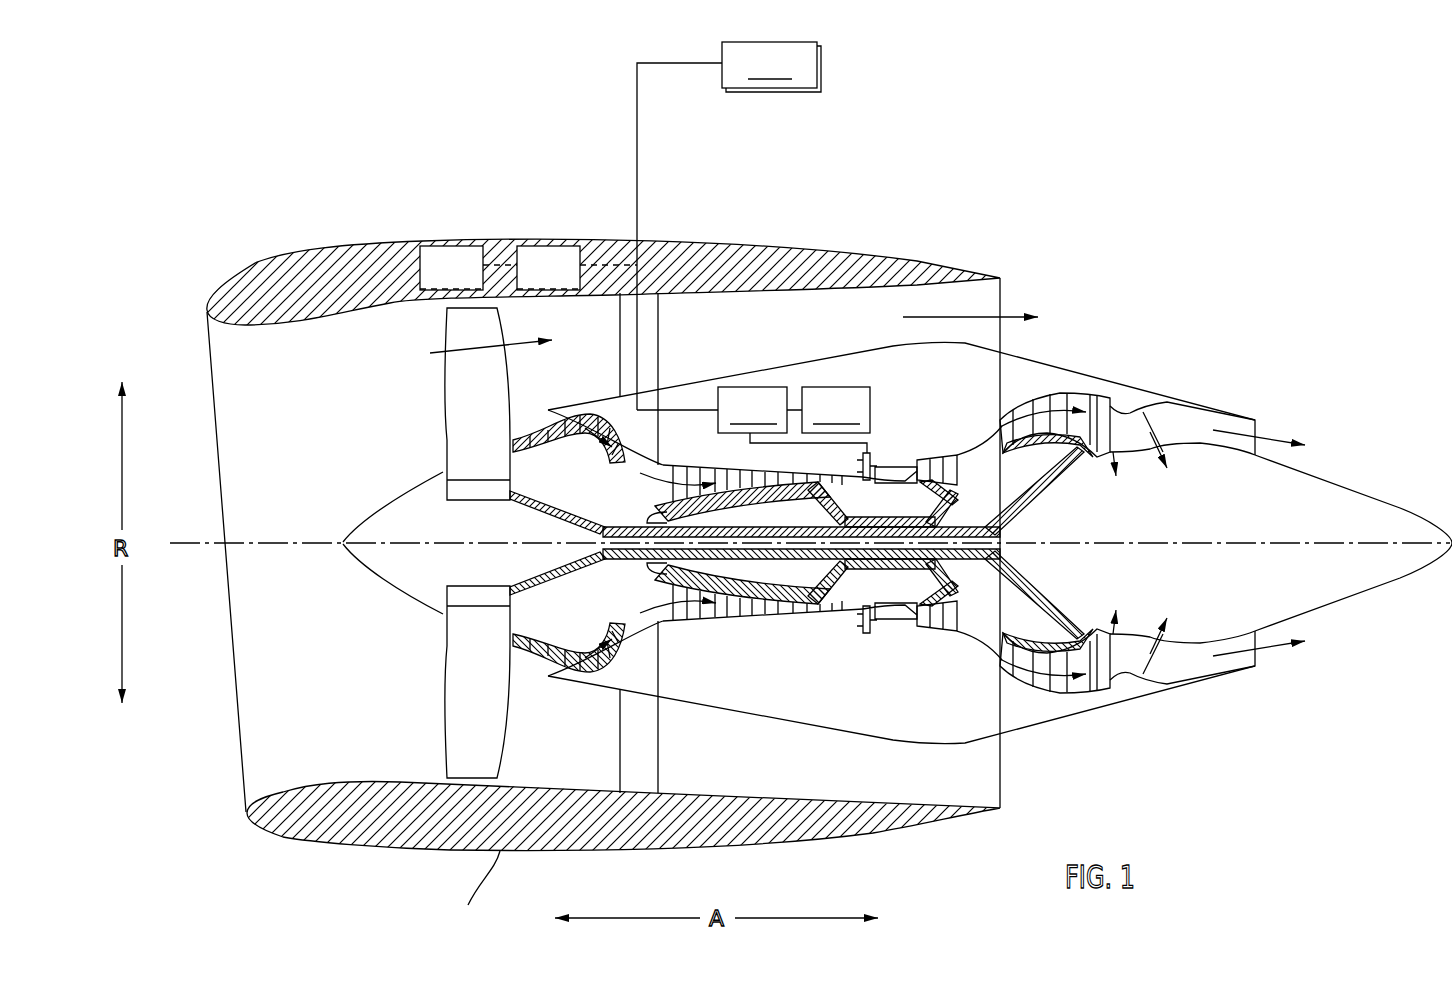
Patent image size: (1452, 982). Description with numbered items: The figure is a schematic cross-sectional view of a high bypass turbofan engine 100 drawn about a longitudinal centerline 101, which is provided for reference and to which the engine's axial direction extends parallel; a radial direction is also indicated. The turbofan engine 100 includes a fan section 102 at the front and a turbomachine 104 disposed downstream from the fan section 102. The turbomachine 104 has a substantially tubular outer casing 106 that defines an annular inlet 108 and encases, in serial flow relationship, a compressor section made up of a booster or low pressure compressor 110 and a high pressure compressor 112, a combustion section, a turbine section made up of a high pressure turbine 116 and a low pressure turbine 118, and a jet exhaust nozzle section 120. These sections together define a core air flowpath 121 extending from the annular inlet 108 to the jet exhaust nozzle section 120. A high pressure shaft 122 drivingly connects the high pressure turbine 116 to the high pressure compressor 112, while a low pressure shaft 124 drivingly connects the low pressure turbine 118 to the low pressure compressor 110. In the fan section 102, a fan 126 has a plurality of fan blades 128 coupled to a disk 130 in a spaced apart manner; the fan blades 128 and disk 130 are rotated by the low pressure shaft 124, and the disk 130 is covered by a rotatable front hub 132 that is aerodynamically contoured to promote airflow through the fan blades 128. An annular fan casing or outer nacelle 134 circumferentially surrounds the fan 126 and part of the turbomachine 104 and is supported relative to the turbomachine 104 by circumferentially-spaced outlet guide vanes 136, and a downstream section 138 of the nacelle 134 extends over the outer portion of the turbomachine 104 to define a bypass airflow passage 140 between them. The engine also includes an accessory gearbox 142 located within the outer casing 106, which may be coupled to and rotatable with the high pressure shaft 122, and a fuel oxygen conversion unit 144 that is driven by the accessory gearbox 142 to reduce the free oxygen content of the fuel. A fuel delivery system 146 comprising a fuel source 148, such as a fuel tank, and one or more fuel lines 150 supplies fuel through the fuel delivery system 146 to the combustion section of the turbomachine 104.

The turbofan engine 100 is at (1162, 248).
The longitudinal centerline 101 is at (1222, 543).
The fan section 102 is at (397, 322).
The turbomachine 104 is at (782, 348).
The outer casing 106 is at (840, 727).
The annular inlet 108 is at (556, 663).
The low pressure compressor 110 is at (596, 681).
The high pressure compressor 112 is at (692, 611).
The high pressure turbine 116 is at (1003, 593).
The low pressure turbine 118 is at (1093, 692).
The jet exhaust nozzle section 120 is at (1159, 666).
The core air flowpath 121 is at (645, 622).
The high pressure shaft 122 is at (893, 515).
The low pressure shaft 124 is at (950, 527).
The fan 126 is at (384, 407).
The fan blades 128 is at (443, 712).
The disk 130 is at (463, 493).
The front hub 132 is at (343, 563).
The outer nacelle 134 is at (472, 894).
The outlet guide vanes 136 is at (658, 327).
The downstream section of the nacelle 138 is at (912, 262).
The bypass airflow passage 140 is at (888, 324).
The accessory gearbox 142 is at (645, 339).
The fuel oxygen conversion unit 144 is at (643, 349).
The fuel delivery system 146 is at (550, 98).
The fuel source 148 is at (771, 67).
The fuel lines 150 is at (637, 183).